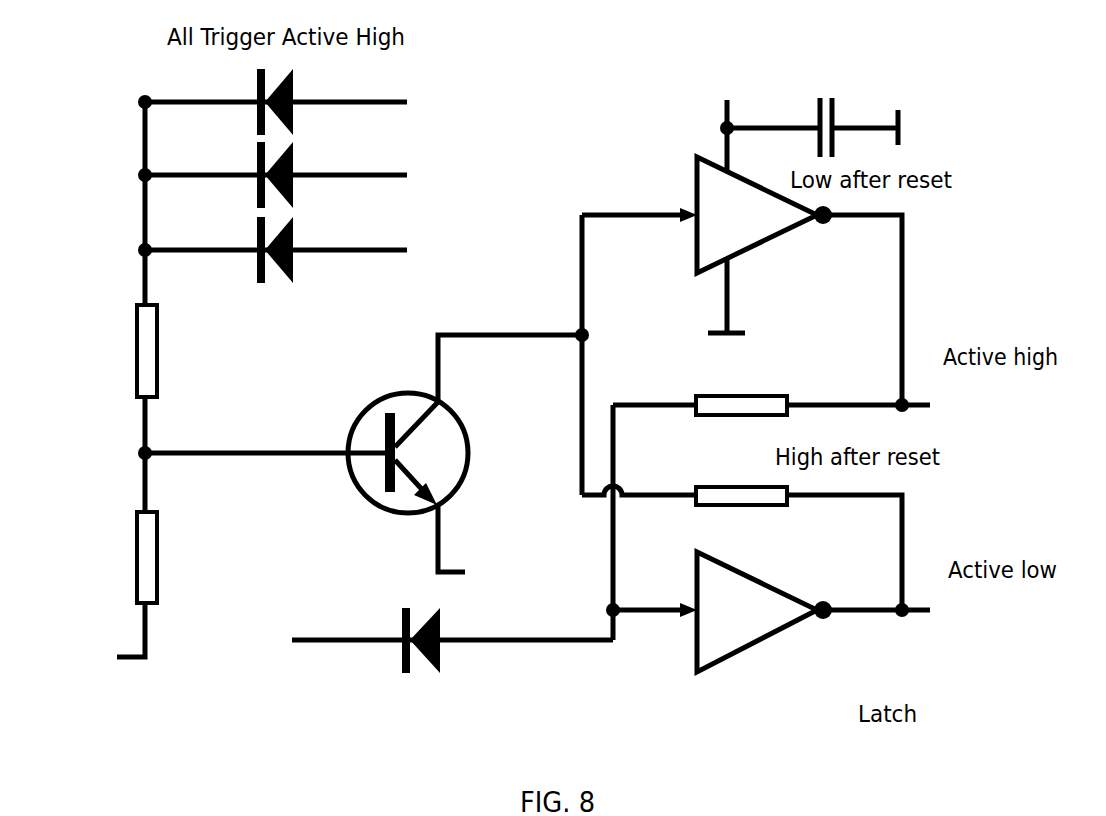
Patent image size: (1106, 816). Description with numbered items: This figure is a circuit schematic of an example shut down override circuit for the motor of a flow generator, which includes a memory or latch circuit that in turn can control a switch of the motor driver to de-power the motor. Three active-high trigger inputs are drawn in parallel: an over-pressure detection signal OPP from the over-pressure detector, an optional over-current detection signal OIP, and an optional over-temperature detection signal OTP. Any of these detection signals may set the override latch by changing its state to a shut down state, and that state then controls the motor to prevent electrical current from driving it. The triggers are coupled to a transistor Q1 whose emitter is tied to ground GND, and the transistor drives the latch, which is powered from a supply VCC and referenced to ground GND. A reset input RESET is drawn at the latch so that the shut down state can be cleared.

The ground terminal GND is at (117, 643).
The over-pressure detection signal OPP is at (407, 85).
The over-current detection signal OIP is at (407, 158).
The over-temperature detection signal OTP is at (407, 233).
The NPN transistor Q1 is at (465, 553).
The supply voltage VCC is at (745, 100).
The reset input RESET is at (292, 625).